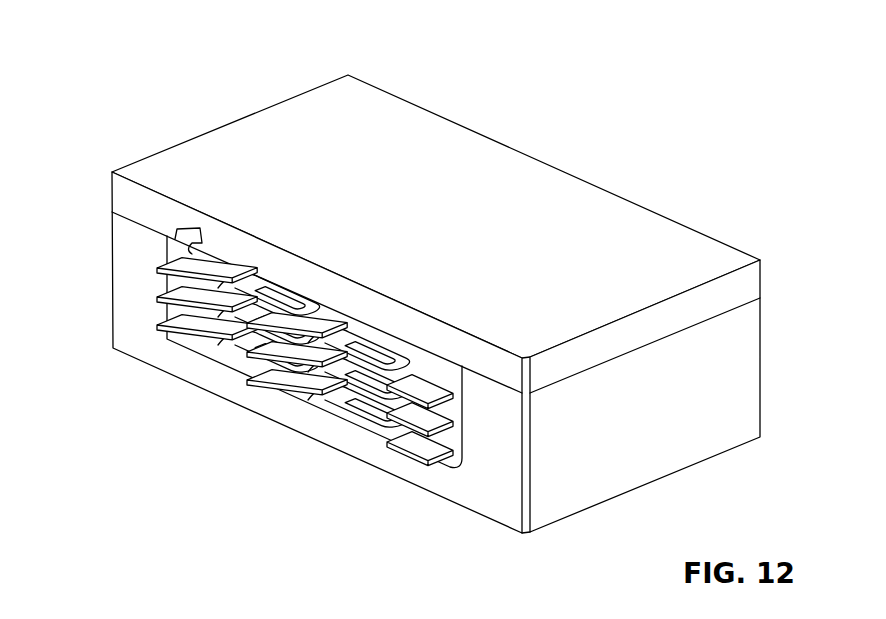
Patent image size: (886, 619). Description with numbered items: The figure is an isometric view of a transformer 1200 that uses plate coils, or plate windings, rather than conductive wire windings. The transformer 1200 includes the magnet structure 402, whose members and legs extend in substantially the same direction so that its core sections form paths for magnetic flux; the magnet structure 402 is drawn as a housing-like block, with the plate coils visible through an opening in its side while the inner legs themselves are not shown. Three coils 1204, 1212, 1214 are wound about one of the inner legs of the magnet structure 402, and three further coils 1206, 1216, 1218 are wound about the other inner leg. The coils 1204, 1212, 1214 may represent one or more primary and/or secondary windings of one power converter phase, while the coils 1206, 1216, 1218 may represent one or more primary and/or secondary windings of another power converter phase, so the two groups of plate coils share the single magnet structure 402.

The transformer 1200 is at (429, 274).
The magnet structure 402 is at (746, 231).
The coil 1204 is at (168, 321).
The coil 1206 is at (389, 415).
The coil 1212 is at (173, 295).
The coil 1214 is at (183, 325).
The coil 1216 is at (387, 412).
The coil 1218 is at (418, 443).